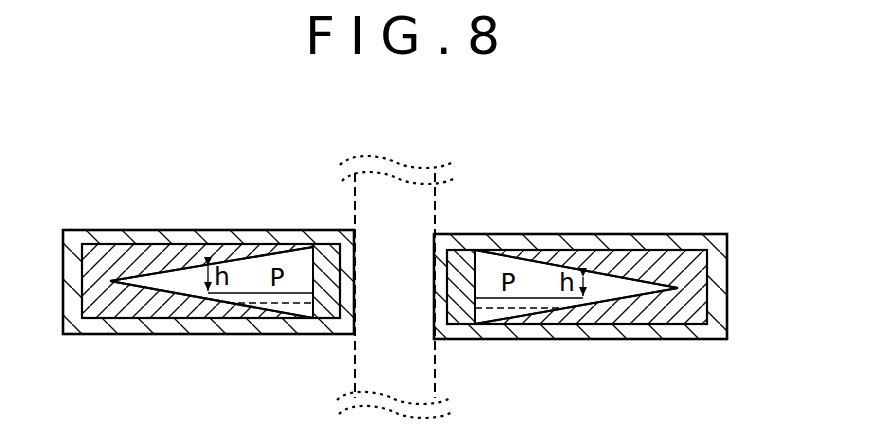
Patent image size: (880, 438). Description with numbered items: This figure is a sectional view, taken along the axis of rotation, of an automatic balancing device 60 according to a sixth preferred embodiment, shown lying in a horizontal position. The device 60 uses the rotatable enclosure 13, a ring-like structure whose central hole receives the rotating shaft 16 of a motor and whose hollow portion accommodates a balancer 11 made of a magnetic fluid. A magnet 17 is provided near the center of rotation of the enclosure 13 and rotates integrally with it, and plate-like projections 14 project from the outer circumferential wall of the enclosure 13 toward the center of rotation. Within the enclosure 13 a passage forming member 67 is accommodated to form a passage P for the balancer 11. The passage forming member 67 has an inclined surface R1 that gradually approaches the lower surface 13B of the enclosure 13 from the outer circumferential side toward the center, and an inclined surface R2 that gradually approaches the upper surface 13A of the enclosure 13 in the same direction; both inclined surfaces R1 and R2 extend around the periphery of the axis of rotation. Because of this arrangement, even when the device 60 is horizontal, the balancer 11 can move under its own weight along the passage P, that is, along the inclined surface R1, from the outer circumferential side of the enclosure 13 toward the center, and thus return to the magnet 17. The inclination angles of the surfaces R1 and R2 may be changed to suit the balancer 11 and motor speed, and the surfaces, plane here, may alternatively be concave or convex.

The automatic balancing device 60 is at (410, 137).
The rotating shaft 16 is at (355, 209).
The magnet 17 is at (458, 265).
The enclosure 13 is at (667, 242).
The upper surface 13A is at (215, 229).
The lower surface 13B is at (290, 334).
The passage forming member 67 is at (210, 318).
The plate-like projections 14 is at (650, 305).
The balancer 11 is at (517, 309).
The inclined surface R1 is at (163, 290).
The inclined surface R2 is at (172, 246).